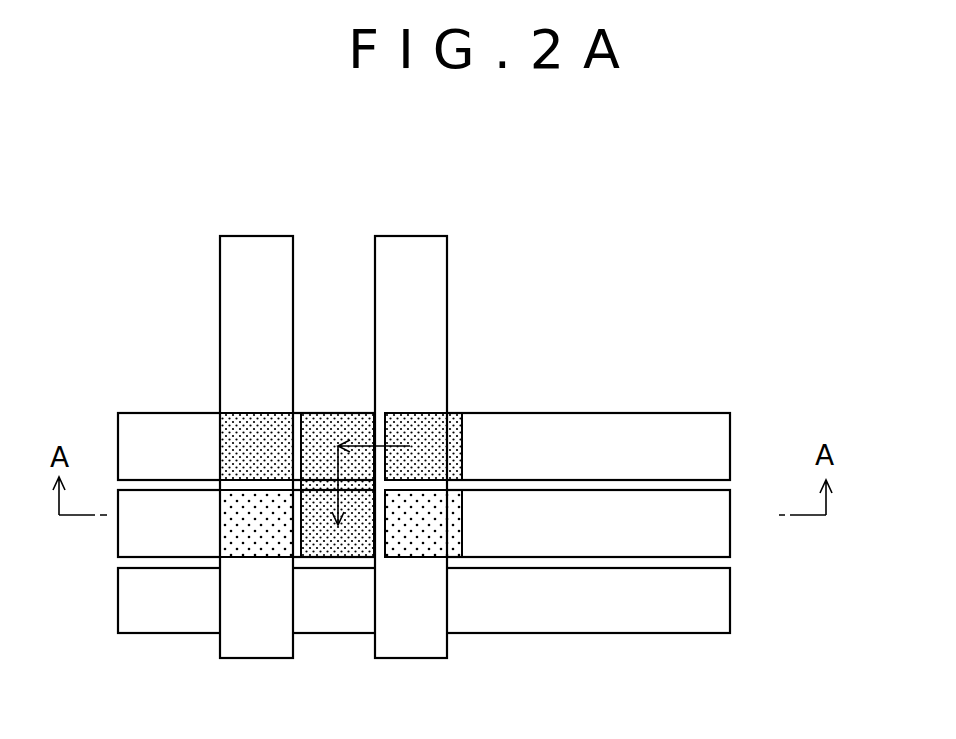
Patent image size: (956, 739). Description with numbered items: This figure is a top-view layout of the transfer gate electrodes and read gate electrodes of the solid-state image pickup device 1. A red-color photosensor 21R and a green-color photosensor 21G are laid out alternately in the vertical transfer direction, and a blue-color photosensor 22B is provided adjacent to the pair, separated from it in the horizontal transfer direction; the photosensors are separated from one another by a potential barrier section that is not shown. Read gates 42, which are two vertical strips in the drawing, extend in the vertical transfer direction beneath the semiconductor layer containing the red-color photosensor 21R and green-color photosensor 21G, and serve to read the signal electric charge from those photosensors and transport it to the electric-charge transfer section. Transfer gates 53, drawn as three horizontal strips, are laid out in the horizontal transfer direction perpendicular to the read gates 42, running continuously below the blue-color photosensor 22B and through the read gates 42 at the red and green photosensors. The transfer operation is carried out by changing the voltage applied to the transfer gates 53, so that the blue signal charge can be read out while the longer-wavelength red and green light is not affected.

The solid-state image pickup device 1 is at (630, 253).
The read gate 42 is at (247, 240).
The transfer gate 53 is at (720, 421).
The blue-color photosensor 22B is at (342, 412).
The green-color photosensor 21G is at (452, 418).
The red-color photosensor 21R is at (452, 518).